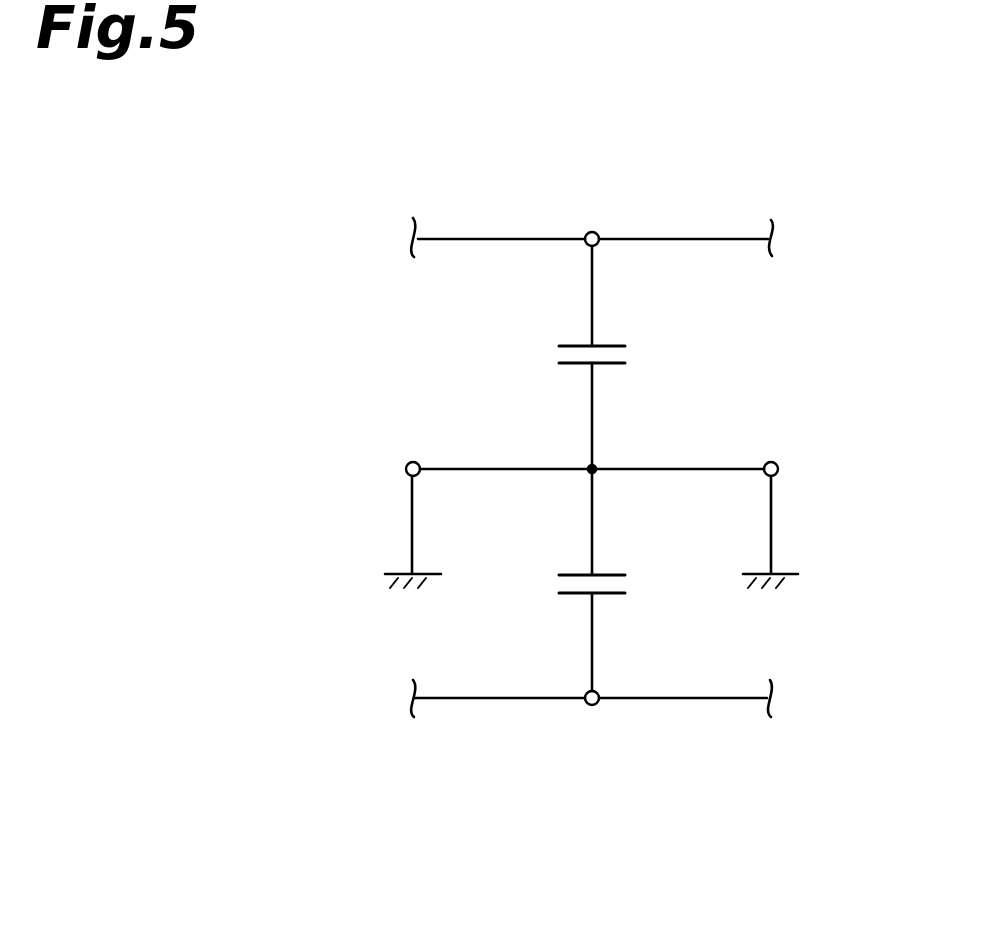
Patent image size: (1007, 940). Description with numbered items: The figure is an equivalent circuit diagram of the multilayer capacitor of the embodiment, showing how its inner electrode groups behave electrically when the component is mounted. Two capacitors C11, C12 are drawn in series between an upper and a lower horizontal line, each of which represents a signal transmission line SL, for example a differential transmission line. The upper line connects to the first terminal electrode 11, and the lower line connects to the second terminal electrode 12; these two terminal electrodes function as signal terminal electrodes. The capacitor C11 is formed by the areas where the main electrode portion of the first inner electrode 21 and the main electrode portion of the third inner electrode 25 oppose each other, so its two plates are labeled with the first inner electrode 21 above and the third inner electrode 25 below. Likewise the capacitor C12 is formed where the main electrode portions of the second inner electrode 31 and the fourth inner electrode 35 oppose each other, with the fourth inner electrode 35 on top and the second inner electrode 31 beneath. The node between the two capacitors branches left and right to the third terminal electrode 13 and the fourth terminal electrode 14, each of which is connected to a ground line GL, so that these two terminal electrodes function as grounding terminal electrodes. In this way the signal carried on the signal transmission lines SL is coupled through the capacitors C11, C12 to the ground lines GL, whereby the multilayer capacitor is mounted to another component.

The first terminal electrode 11 is at (592, 231).
The second terminal electrode 12 is at (592, 706).
The third terminal electrode 13 is at (406, 467).
The fourth terminal electrode 14 is at (779, 467).
The first inner electrode 21 is at (615, 343).
The third inner electrode 25 is at (570, 366).
The second inner electrode 31 is at (570, 596).
The fourth inner electrode 35 is at (615, 572).
The capacitor C11 is at (656, 358).
The capacitor C12 is at (656, 589).
The signal transmission line SL is at (478, 238).
The ground line GL is at (411, 517).